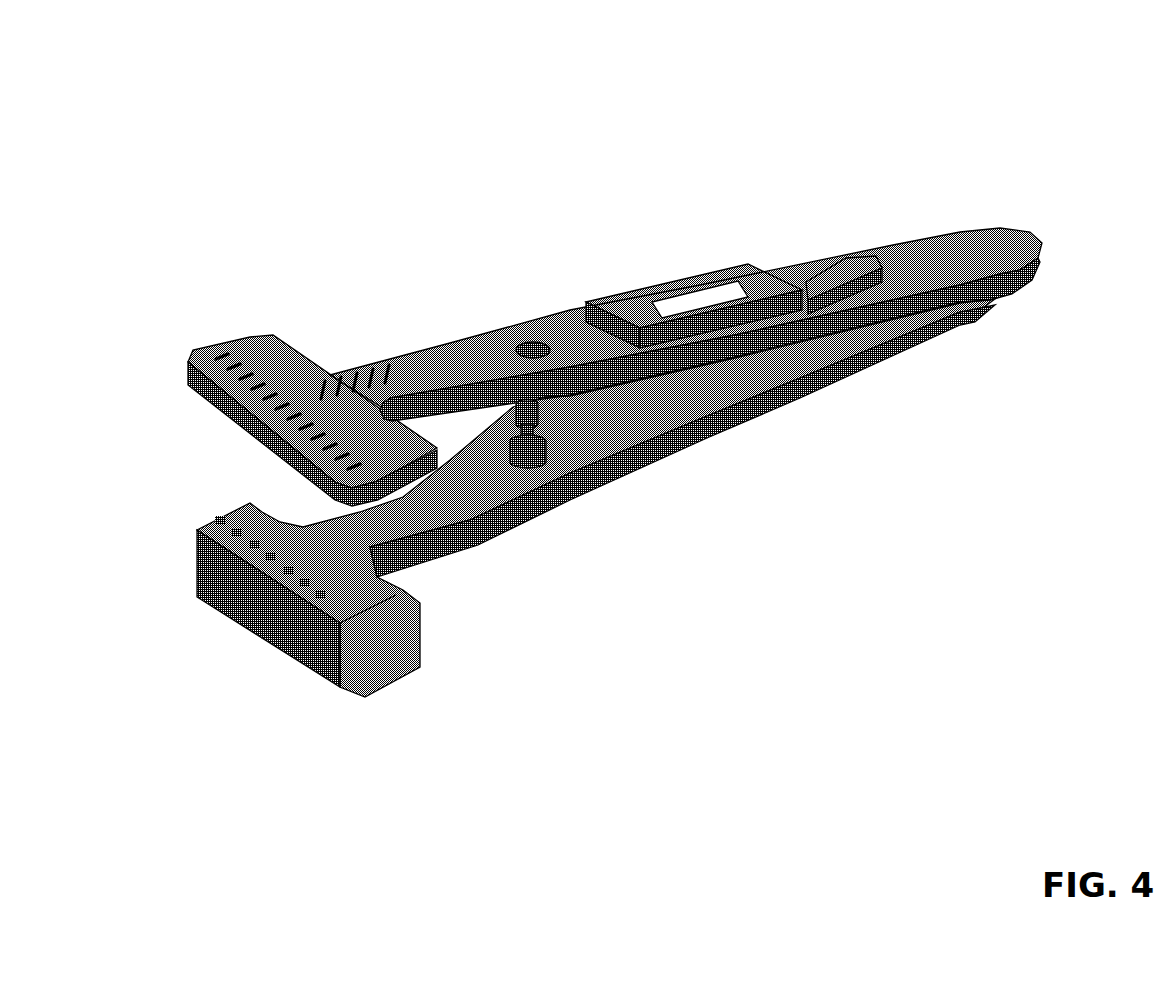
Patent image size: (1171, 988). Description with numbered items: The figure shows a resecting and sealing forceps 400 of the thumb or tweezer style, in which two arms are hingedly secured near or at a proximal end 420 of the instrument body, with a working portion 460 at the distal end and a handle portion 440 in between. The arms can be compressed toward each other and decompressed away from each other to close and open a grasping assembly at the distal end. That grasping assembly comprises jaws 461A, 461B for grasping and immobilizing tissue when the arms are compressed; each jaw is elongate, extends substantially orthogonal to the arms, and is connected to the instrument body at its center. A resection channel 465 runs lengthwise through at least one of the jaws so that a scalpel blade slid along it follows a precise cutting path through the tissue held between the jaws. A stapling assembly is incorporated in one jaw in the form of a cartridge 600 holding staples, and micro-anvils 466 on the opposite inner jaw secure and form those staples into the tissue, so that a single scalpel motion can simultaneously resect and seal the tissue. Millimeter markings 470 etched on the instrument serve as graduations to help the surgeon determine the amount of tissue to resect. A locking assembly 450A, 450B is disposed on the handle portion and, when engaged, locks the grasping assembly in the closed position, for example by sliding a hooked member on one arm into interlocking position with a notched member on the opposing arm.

The resecting and sealing forceps 400 is at (1166, 78).
The proximal end 420 is at (998, 300).
The handle portion 440 is at (600, 496).
The locking assembly 450A is at (700, 253).
The locking assembly 450B is at (541, 483).
The working portion 460 is at (546, 543).
The jaw 461A is at (175, 370).
The jaw 461B is at (212, 622).
The resection channel 465 is at (253, 367).
The micro-anvils 466 is at (250, 408).
The millimeter markings 470 is at (712, 312).
The cartridge 600 is at (246, 652).